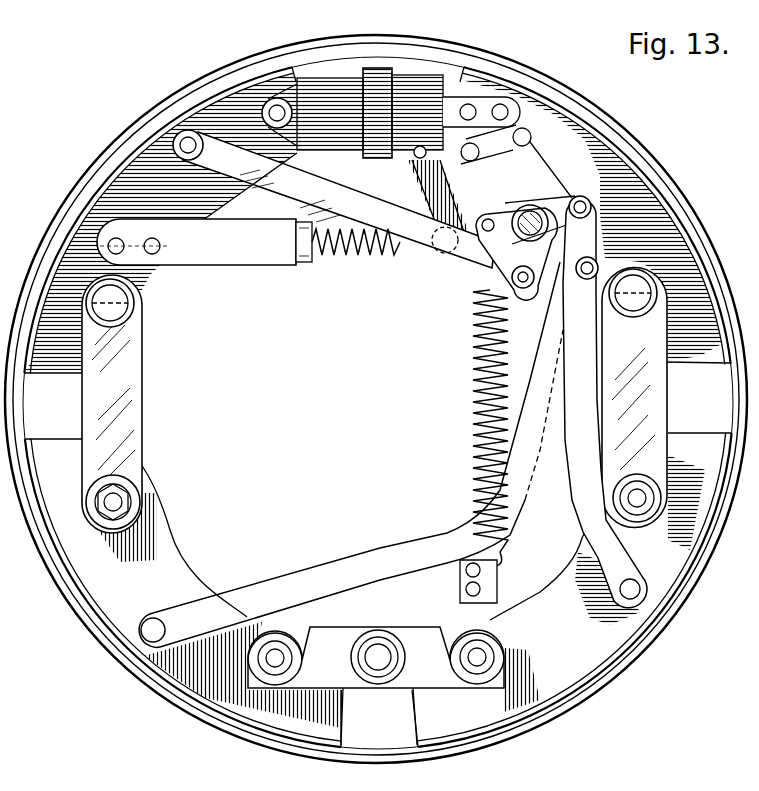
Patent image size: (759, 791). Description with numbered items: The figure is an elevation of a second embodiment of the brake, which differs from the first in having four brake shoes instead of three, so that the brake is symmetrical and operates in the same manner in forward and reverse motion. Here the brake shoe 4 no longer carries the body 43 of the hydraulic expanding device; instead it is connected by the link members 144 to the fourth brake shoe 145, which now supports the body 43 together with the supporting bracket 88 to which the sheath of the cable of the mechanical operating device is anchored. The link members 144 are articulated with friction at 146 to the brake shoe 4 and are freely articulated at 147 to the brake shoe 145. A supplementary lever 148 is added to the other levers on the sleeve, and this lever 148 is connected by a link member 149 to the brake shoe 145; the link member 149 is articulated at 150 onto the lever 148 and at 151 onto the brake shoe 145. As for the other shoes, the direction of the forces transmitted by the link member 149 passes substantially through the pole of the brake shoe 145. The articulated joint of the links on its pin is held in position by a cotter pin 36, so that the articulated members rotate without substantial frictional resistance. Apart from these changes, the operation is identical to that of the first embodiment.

The brake shoe 4 is at (155, 565).
The cotter pin 36 is at (378, 657).
The body of the hydraulic expanding device 43 is at (338, 83).
The supporting bracket 88 is at (266, 243).
The link members 144 is at (120, 418).
The fourth brake shoe 145 is at (147, 271).
The friction articulation 146 is at (116, 501).
The free articulation 147 is at (123, 310).
The supplementary lever 148 is at (537, 250).
The link member 149 is at (338, 208).
The articulation on the lever 150 is at (487, 282).
The articulation on the brake shoe 151 is at (188, 145).